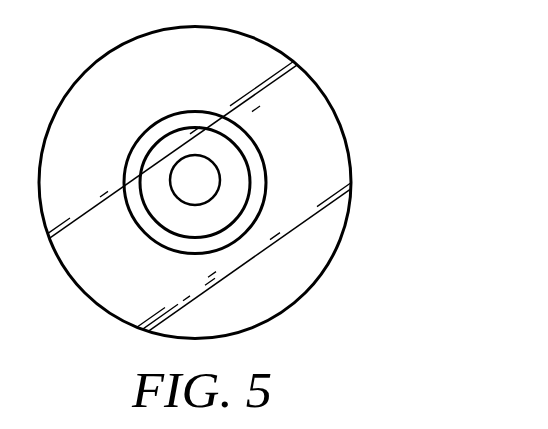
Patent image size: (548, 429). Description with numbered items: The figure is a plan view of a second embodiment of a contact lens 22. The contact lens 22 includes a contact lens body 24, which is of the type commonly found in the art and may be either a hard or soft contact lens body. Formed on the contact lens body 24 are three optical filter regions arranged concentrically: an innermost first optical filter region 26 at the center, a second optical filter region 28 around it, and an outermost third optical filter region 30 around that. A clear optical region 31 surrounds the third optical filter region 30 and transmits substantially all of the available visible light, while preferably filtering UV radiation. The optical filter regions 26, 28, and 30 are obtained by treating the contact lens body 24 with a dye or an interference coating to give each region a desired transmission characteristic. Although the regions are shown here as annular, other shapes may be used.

The contact lens 22 is at (397, 121).
The contact lens body 24 is at (297, 65).
The innermost first optical filter region 26 is at (207, 193).
The second optical filter region 28 is at (250, 187).
The outermost third optical filter region 30 is at (260, 146).
The clear optical region 31 is at (240, 75).